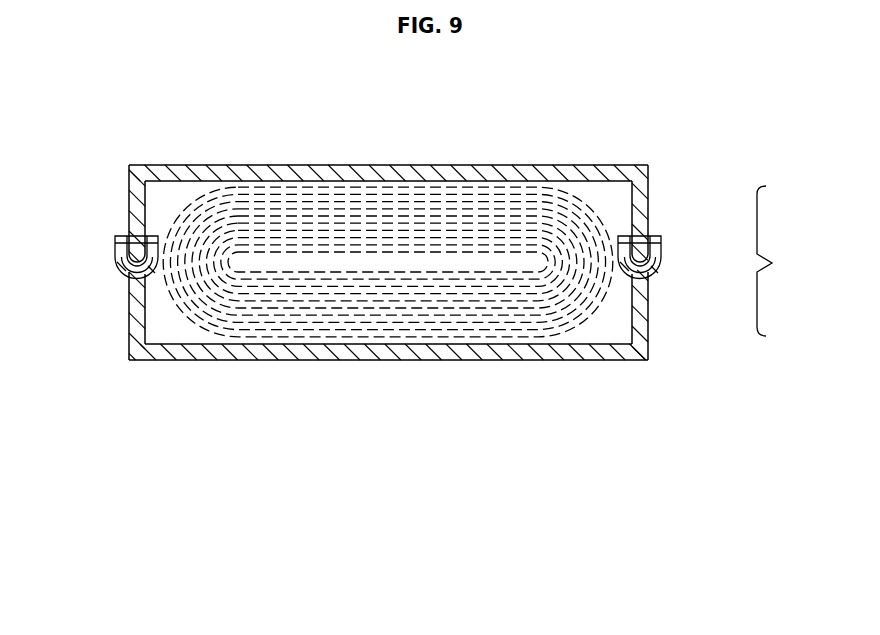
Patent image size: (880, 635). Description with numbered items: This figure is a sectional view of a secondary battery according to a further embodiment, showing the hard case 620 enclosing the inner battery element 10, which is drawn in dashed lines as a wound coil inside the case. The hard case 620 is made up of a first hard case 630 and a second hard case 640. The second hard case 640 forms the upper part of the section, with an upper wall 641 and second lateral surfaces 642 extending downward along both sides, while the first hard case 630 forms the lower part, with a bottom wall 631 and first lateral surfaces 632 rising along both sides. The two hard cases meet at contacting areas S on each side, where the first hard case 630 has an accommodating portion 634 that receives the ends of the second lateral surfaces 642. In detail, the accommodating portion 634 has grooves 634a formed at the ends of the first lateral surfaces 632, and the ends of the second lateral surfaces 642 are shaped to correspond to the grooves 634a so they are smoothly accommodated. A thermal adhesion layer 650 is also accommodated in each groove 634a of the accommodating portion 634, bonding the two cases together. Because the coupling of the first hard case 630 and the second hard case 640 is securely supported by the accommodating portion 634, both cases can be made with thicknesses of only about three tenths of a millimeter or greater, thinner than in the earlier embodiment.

The hard case 620 is at (430, 265).
The second hard case 640 is at (396, 184).
The upper plate of upper frame 641 is at (218, 173).
The second lateral surfaces 642 is at (130, 202).
The first hard case 630 is at (395, 347).
The bottom plate of lower frame 631 is at (216, 355).
The first lateral surfaces 632 is at (130, 318).
The accommodating portion 634 is at (120, 270).
The grooves 634a is at (120, 246).
The thermal adhesion layer 650 is at (94, 255).
The contacting areas S is at (370, 253).
The coil 10 is at (336, 202).